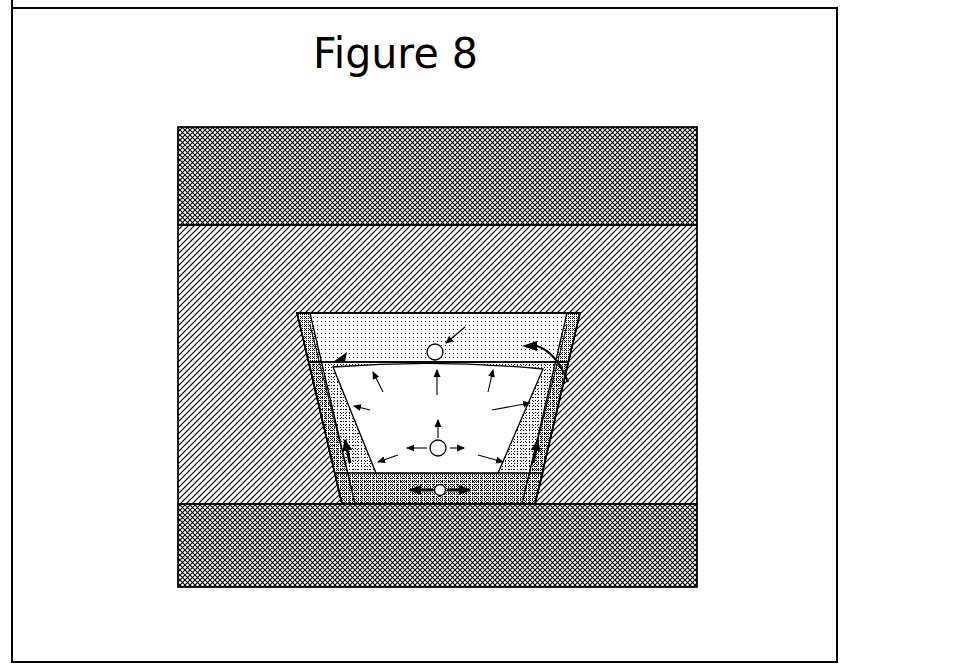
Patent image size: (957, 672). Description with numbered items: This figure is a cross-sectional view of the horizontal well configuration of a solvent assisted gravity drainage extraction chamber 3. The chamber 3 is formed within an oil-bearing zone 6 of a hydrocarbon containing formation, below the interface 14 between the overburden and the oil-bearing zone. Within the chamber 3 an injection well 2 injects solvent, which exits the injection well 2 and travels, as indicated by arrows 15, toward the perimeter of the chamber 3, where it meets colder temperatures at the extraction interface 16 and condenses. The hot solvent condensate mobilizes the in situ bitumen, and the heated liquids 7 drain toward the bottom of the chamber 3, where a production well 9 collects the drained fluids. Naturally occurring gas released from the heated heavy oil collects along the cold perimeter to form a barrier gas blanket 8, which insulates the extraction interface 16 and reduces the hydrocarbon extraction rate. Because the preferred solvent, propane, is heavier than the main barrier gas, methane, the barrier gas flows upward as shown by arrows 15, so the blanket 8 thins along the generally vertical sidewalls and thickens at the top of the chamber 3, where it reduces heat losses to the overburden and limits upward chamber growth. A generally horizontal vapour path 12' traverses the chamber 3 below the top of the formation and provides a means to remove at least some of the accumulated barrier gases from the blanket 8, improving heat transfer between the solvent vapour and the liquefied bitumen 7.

The injection well 2 is at (433, 456).
The extraction chamber 3 is at (462, 403).
The oil-bearing zone 6 is at (570, 378).
The heated liquids 7 is at (430, 488).
The barrier gas blanket 8 is at (527, 333).
The production well 9 is at (445, 497).
The vapour path 12' is at (248, 285).
The interface between overburden and oil-bearing zone 14 is at (697, 224).
The barrier gas upward flow arrows 15 is at (438, 427).
The extraction interface 16 is at (310, 362).